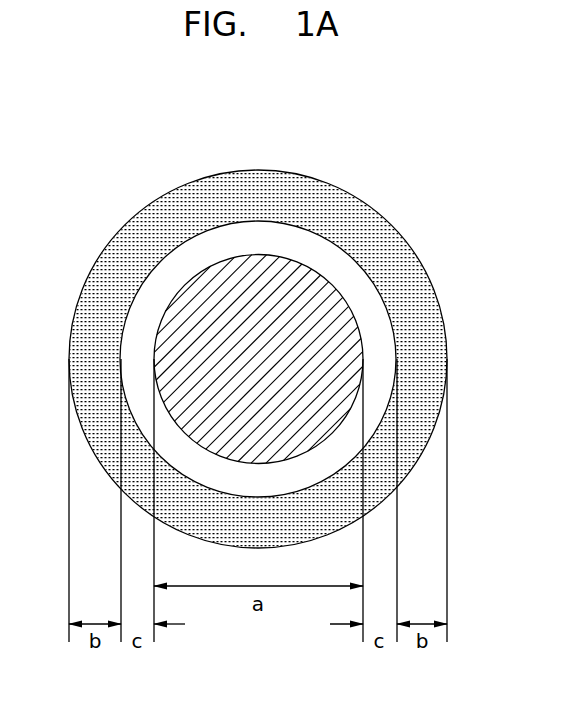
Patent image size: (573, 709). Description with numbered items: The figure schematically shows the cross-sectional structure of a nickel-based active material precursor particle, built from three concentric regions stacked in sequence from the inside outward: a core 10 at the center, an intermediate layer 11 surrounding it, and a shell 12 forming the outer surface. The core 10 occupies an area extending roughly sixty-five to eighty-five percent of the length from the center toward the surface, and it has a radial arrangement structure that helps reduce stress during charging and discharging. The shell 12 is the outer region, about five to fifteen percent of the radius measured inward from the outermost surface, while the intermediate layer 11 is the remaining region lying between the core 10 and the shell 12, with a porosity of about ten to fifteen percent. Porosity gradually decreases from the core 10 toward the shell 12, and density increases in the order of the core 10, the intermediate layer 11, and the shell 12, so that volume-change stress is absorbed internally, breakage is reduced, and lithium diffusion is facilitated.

The core 10 is at (325, 298).
The intermediate layer 11 is at (313, 248).
The shell 12 is at (260, 183).